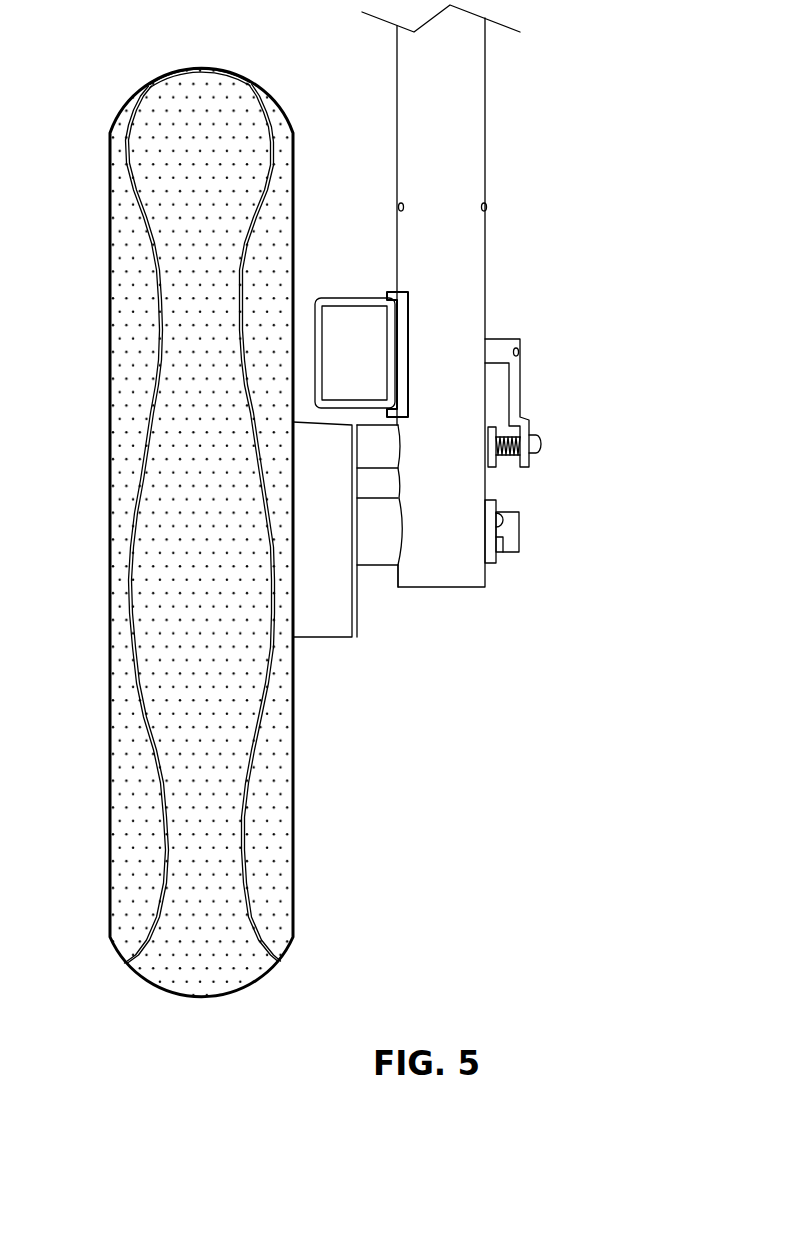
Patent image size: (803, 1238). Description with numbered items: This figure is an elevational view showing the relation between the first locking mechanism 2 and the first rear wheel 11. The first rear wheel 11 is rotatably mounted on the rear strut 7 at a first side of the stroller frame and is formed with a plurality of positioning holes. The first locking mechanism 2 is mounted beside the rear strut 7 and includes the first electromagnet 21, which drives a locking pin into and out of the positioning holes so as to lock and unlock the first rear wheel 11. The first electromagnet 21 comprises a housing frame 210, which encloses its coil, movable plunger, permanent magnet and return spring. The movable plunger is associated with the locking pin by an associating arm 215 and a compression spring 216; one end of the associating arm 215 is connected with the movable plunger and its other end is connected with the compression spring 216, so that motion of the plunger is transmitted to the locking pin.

The first locking mechanism 2 is at (487, 647).
The rear strut 7 is at (445, 112).
The first rear wheel 11 is at (135, 119).
The first electromagnet 21 is at (372, 368).
The housing frame 210 is at (356, 297).
The associating arm 215 is at (516, 388).
The compression spring 216 is at (503, 455).